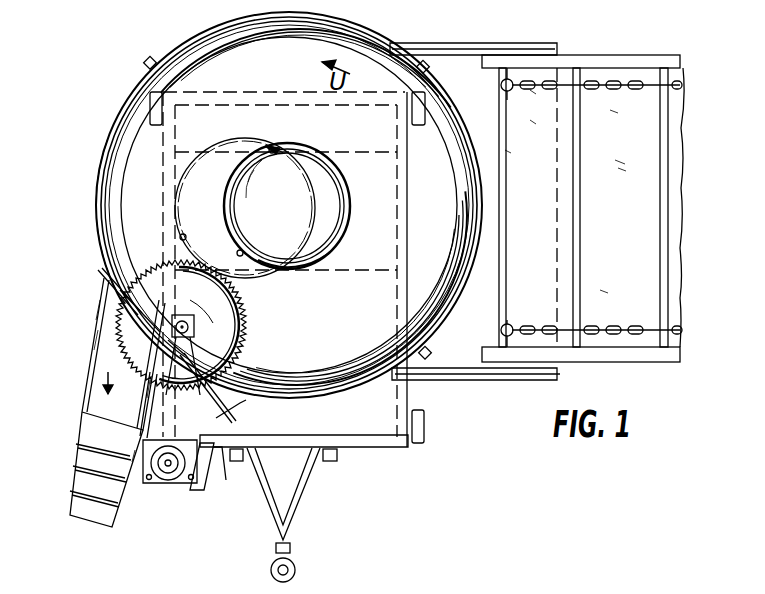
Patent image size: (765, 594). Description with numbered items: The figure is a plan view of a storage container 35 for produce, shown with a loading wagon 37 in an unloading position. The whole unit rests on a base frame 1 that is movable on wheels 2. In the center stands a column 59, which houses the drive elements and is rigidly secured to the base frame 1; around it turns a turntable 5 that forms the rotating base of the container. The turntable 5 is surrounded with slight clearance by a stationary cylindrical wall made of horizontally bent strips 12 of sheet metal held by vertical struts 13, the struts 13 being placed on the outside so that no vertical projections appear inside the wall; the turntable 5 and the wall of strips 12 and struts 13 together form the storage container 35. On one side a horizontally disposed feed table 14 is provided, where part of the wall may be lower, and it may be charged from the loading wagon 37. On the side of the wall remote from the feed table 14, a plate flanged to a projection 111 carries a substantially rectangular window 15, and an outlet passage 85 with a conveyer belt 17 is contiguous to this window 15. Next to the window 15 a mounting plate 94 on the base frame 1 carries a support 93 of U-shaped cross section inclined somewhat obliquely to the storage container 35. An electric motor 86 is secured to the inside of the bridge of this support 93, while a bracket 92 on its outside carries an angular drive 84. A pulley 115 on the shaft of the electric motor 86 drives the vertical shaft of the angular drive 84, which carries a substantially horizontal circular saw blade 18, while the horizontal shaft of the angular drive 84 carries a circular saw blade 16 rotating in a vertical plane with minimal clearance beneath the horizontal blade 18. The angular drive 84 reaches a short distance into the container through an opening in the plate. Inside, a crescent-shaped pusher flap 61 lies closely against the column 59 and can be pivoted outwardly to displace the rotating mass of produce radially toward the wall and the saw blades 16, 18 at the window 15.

The base frame 1 is at (367, 450).
The wheels 2 is at (426, 428).
The turntable 5 is at (233, 66).
The sheet metal strips 12 is at (364, 40).
The vertical struts 13 is at (150, 59).
The feed table 14 is at (484, 380).
The window 15 is at (108, 293).
The circular saw blade 16 is at (163, 285).
The conveyer belt 17 is at (76, 491).
The circular saw blade 18 is at (238, 316).
The storage container 35 is at (112, 125).
The loading wagon 37 is at (604, 58).
The column 59 is at (326, 250).
The pusher flap 61 is at (205, 158).
The angular drive 84 is at (193, 330).
The outlet passage 85 is at (88, 381).
The electric motor 86 is at (172, 482).
The bracket 92 is at (202, 387).
The support 93 is at (204, 484).
The mounting plate 94 is at (222, 464).
The projection 111 is at (234, 413).
The pulley 115 is at (158, 480).